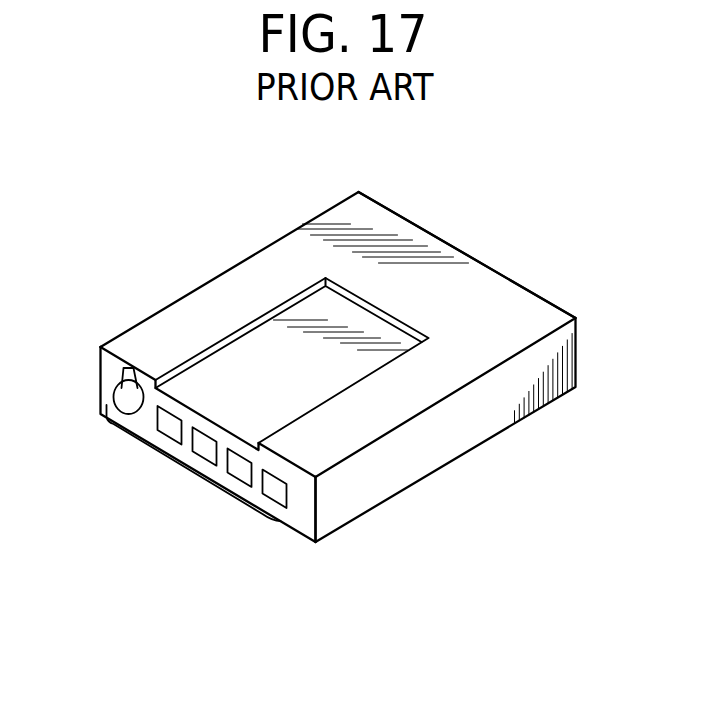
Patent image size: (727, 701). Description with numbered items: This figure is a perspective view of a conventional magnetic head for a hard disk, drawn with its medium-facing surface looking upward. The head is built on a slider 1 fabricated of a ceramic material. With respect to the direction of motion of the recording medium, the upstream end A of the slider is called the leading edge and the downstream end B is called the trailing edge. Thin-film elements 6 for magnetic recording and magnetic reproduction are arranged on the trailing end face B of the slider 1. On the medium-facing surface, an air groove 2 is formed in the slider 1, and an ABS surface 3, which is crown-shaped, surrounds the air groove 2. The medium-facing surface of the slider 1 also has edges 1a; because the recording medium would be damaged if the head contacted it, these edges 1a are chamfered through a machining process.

The slider 1 is at (460, 428).
The edges 1a is at (540, 294).
The air groove 2 is at (328, 368).
The ABS surface 3 is at (212, 310).
The thin-film elements 6 is at (183, 472).
The upstream end A is at (481, 254).
The downstream end B is at (126, 458).